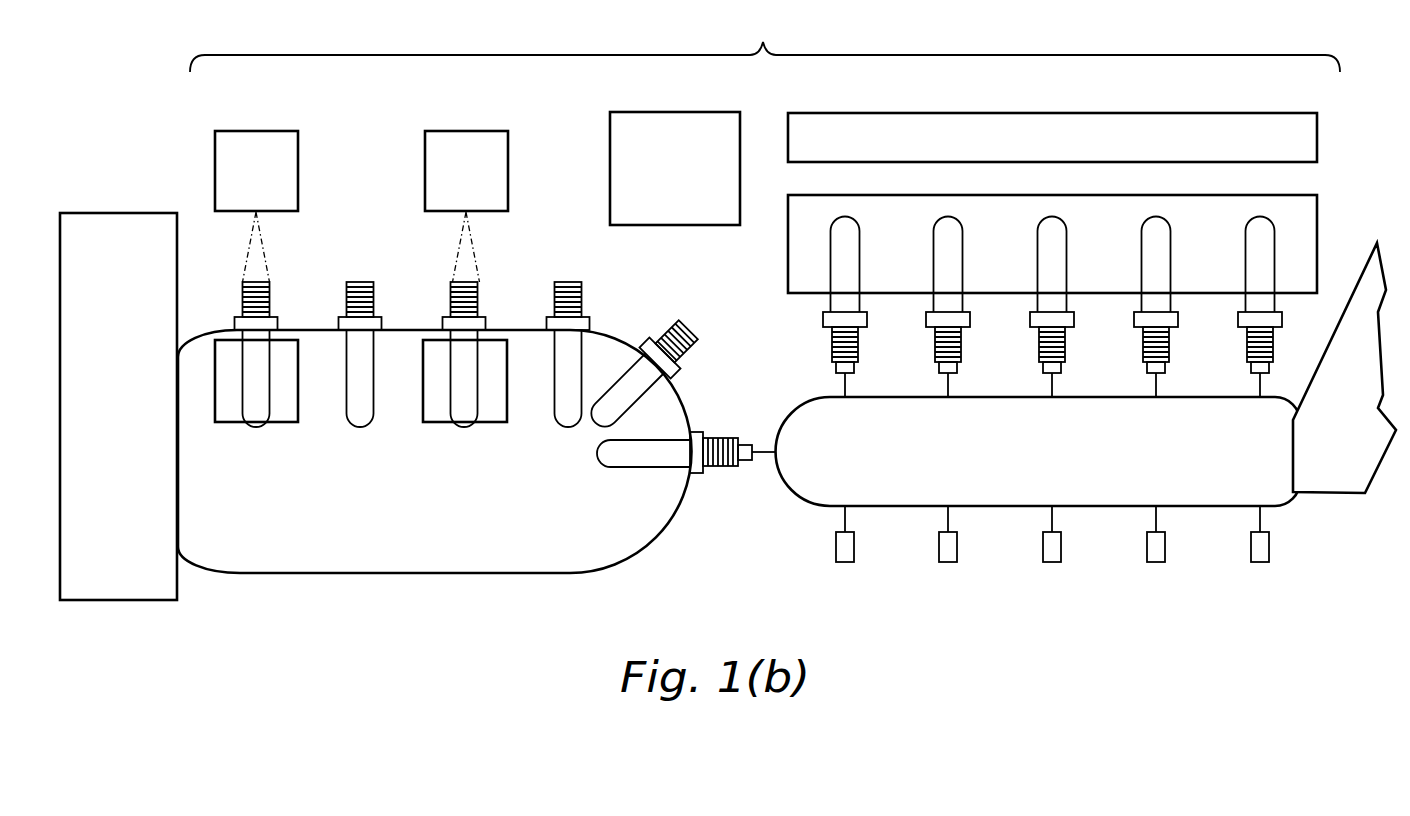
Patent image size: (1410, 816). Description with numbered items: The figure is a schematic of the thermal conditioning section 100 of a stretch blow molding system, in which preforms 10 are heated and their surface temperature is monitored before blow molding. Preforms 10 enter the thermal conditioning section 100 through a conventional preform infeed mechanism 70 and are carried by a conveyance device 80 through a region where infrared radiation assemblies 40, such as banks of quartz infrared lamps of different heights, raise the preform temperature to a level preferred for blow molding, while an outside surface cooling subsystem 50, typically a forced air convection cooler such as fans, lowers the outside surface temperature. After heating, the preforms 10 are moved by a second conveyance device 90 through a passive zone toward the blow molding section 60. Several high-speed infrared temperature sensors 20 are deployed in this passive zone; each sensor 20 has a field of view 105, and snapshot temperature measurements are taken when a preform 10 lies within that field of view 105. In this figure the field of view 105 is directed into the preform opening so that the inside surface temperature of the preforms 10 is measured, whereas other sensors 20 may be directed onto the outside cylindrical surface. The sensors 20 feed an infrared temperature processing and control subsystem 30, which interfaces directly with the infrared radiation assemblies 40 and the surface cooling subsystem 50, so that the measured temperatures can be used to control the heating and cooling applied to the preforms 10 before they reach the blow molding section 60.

The preform 10 is at (617, 367).
The high-speed infrared temperature sensor 20 is at (215, 170).
The infrared temperature processing and control subsystem 30 is at (610, 168).
The infrared radiation assembly 40 is at (1317, 243).
The outside surface cooling subsystem 50 is at (1317, 140).
The blow molding section 60 is at (107, 213).
The preform infeed mechanism 70 is at (1336, 495).
The conveyance device 80 is at (802, 480).
The conveyance device 90 is at (377, 573).
The thermal conditioning section 100 is at (765, 41).
The field of view 105 is at (457, 250).